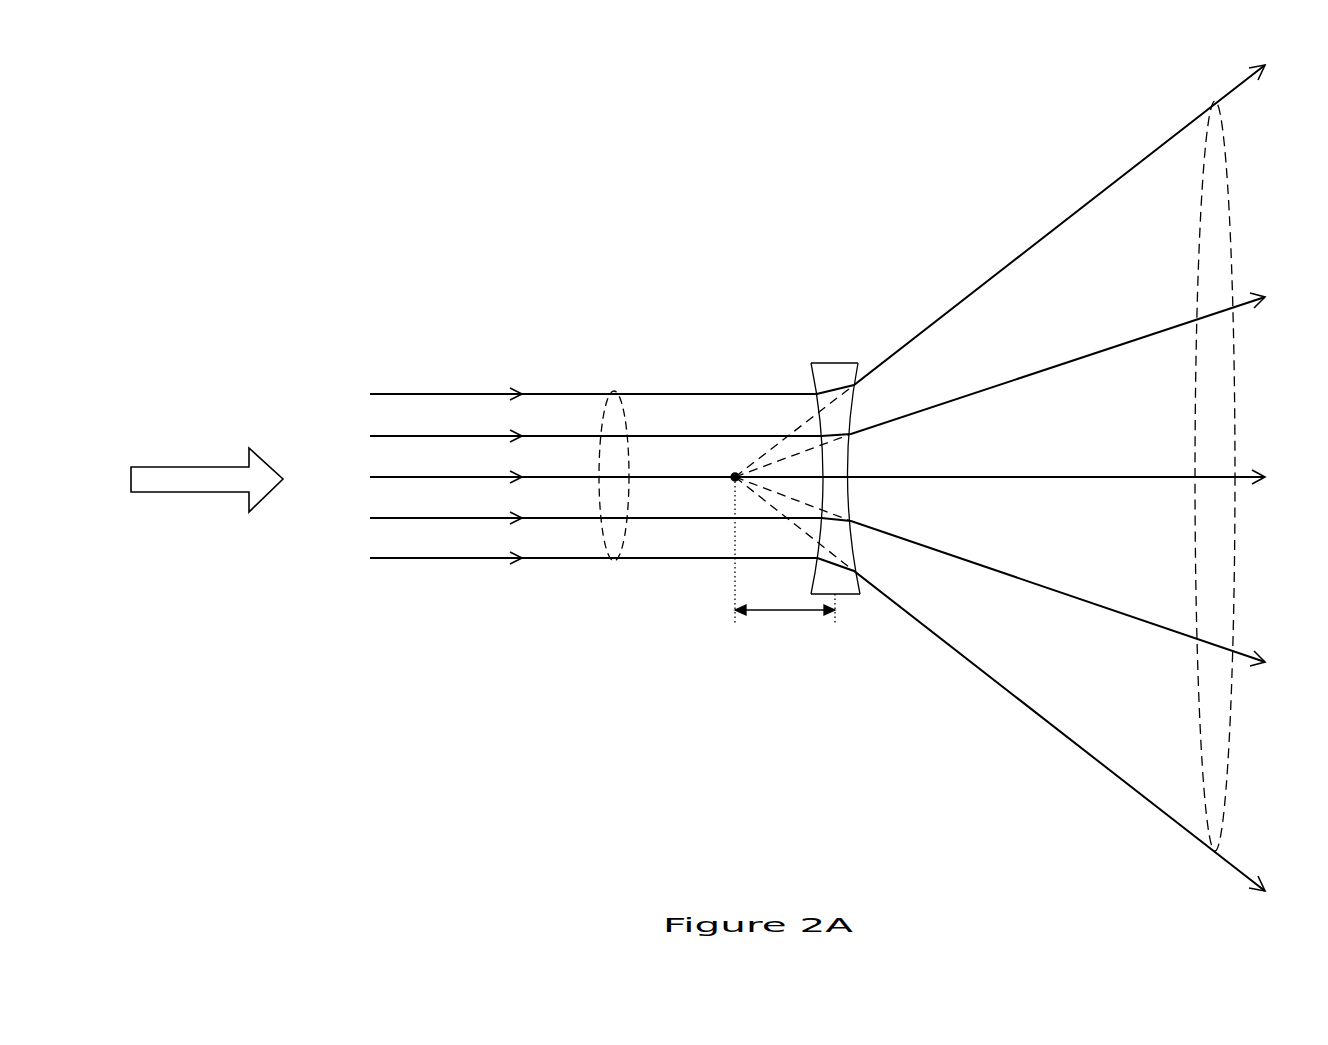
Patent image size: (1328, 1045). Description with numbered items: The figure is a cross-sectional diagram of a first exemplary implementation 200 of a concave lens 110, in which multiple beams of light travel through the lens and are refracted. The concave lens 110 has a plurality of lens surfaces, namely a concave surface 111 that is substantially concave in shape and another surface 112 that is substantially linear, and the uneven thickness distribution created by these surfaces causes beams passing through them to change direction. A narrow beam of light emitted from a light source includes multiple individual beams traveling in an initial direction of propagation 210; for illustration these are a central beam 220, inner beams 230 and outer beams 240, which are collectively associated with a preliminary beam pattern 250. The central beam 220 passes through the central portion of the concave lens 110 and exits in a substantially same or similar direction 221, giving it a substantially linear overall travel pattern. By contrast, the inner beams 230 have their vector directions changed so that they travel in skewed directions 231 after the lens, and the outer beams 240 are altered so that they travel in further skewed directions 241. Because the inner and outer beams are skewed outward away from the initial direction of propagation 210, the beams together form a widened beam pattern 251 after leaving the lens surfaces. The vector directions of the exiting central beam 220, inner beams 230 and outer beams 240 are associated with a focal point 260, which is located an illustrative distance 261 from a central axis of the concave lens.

The first exemplary implementation 200 is at (497, 772).
The concave lens 110 is at (847, 436).
The concave surface 111 is at (812, 380).
The another surface 112 is at (848, 502).
The initial direction of propagation 210 is at (197, 477).
The central beam 220 is at (575, 477).
The inner beams 230 is at (574, 477).
The outer beams 240 is at (572, 476).
The same or similar direction 221 is at (1071, 479).
The skewed directions 231 is at (1070, 479).
The further skewed directions 241 is at (1064, 480).
The preliminary beam pattern 250 is at (622, 408).
The widened beam pattern 251 is at (1237, 203).
The focal point 260 is at (732, 474).
The illustrative distance 261 is at (786, 612).